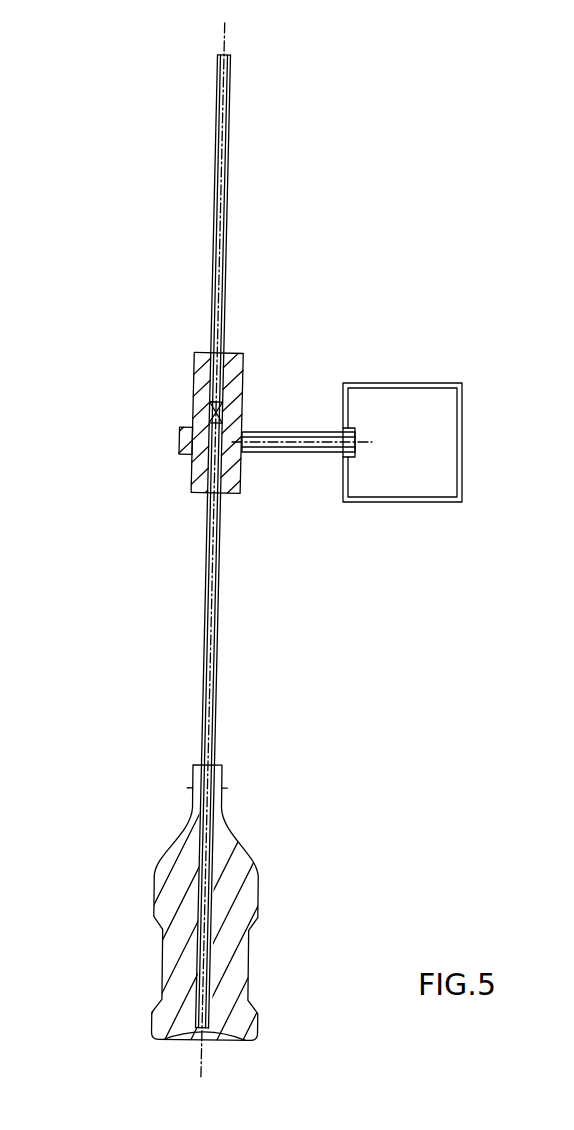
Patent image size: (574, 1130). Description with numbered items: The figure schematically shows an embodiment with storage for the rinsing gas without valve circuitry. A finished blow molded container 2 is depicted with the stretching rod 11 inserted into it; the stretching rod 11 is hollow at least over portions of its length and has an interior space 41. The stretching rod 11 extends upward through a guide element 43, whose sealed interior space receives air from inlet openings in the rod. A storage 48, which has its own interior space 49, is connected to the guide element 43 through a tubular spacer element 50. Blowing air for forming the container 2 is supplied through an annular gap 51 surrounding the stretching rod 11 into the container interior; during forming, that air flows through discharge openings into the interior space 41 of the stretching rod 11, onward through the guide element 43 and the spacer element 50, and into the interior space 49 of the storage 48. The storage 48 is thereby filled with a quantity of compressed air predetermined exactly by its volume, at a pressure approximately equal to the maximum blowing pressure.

The blow molded container 2 is at (153, 873).
The stretching rod 11 is at (207, 587).
The interior space of the stretching rod 41 is at (220, 637).
The guide element 43 is at (144, 407).
The storage 48 is at (405, 452).
The interior space of the storage 49 is at (417, 450).
The tubular spacer element 50 is at (305, 432).
The annular gap 51 is at (221, 753).